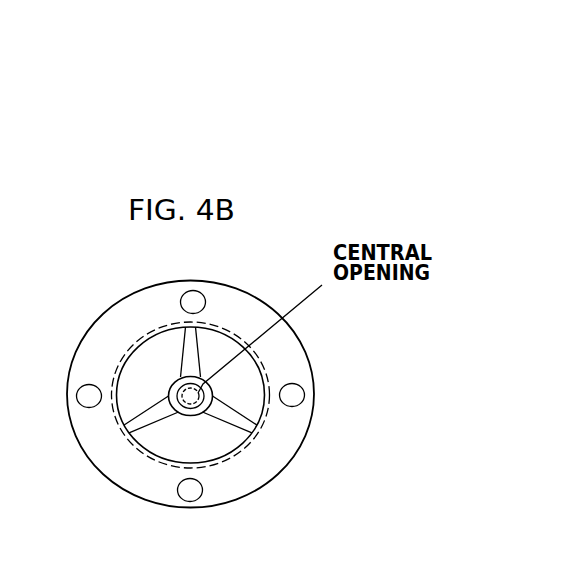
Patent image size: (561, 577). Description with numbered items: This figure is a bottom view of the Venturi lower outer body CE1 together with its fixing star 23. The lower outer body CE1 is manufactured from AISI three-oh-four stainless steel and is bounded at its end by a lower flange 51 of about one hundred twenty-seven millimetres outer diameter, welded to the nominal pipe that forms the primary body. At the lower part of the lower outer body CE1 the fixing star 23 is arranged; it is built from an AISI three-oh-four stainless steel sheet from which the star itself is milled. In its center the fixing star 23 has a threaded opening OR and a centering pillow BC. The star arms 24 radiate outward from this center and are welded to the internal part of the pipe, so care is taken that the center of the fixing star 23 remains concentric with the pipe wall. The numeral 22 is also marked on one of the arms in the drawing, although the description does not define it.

The lower flange 51 is at (190, 384).
The lower outer body CE1 is at (123, 287).
The fixing star 23 is at (245, 397).
The spoke 22 is at (172, 414).
The star arms 24 is at (163, 402).
The centering pillow BC is at (203, 386).
The threaded opening OR is at (191, 397).